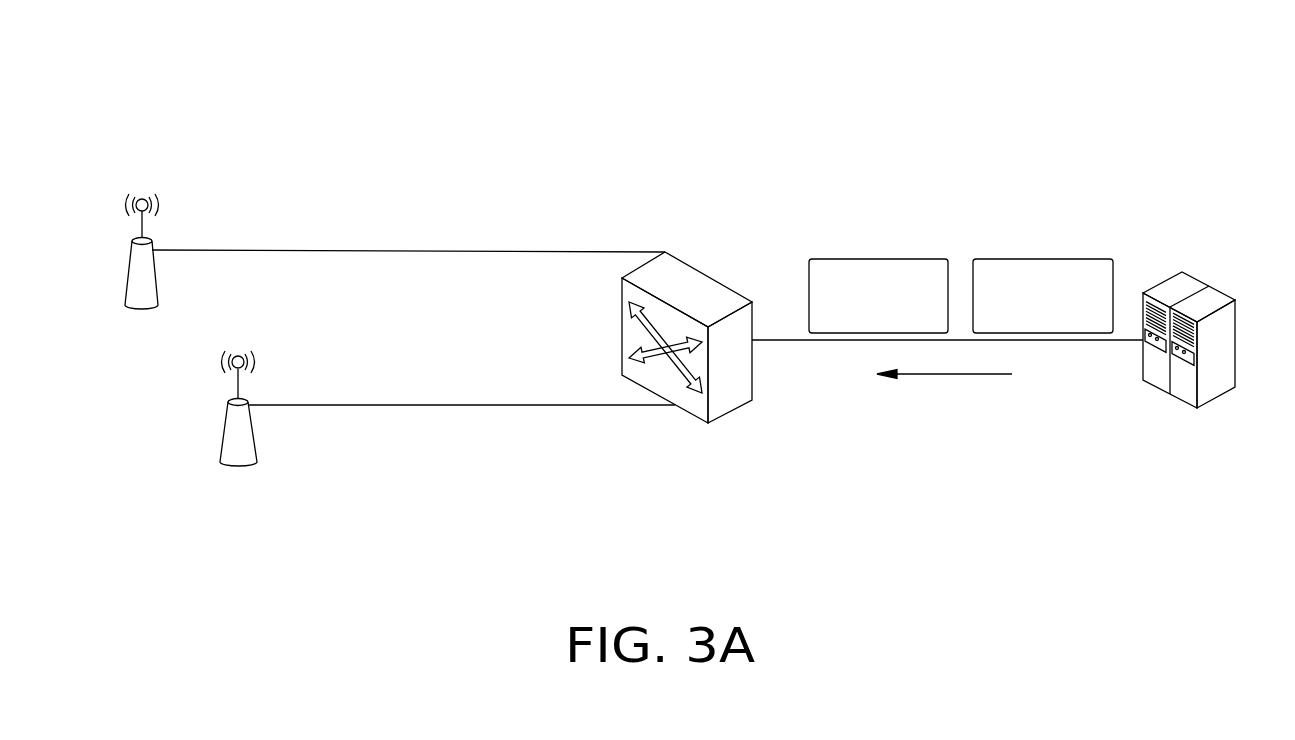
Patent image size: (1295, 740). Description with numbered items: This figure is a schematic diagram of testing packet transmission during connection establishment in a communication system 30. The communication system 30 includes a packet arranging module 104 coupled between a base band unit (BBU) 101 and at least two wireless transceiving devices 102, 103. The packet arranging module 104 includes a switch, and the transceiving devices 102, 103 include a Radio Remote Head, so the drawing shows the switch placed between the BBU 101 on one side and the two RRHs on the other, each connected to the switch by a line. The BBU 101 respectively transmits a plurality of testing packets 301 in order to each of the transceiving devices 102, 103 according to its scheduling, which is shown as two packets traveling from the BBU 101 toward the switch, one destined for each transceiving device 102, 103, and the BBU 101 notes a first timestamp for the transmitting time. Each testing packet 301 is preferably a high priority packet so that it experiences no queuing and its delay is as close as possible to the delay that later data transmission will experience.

The communication system 30 is at (640, 72).
The base band unit (BBU) 101 is at (1197, 277).
The wireless transceiving device 102 is at (137, 262).
The wireless transceiving device 103 is at (237, 428).
The packet arranging module 104 is at (708, 274).
The testing packet 301 is at (888, 258).